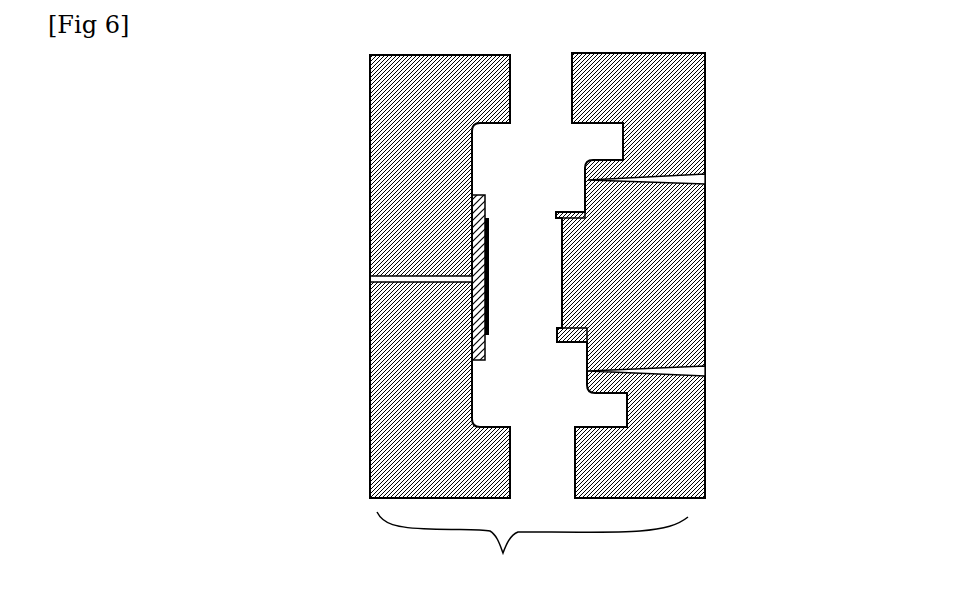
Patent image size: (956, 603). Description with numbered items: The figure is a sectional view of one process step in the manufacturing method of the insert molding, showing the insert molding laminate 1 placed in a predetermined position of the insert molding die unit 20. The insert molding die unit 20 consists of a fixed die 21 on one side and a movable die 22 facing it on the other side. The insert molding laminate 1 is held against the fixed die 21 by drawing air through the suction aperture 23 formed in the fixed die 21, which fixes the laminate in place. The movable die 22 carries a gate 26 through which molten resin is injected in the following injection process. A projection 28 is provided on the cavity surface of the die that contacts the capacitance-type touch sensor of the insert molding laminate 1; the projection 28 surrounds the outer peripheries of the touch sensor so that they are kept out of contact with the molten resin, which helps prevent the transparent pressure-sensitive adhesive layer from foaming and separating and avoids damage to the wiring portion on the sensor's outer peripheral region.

The insert molding laminate 1 is at (473, 312).
The insert molding die unit 20 is at (532, 550).
The fixed die 21 is at (397, 95).
The movable die 22 is at (683, 123).
The suction aperture 23 is at (357, 278).
The gate 26 is at (693, 180).
The projection 28 is at (560, 216).